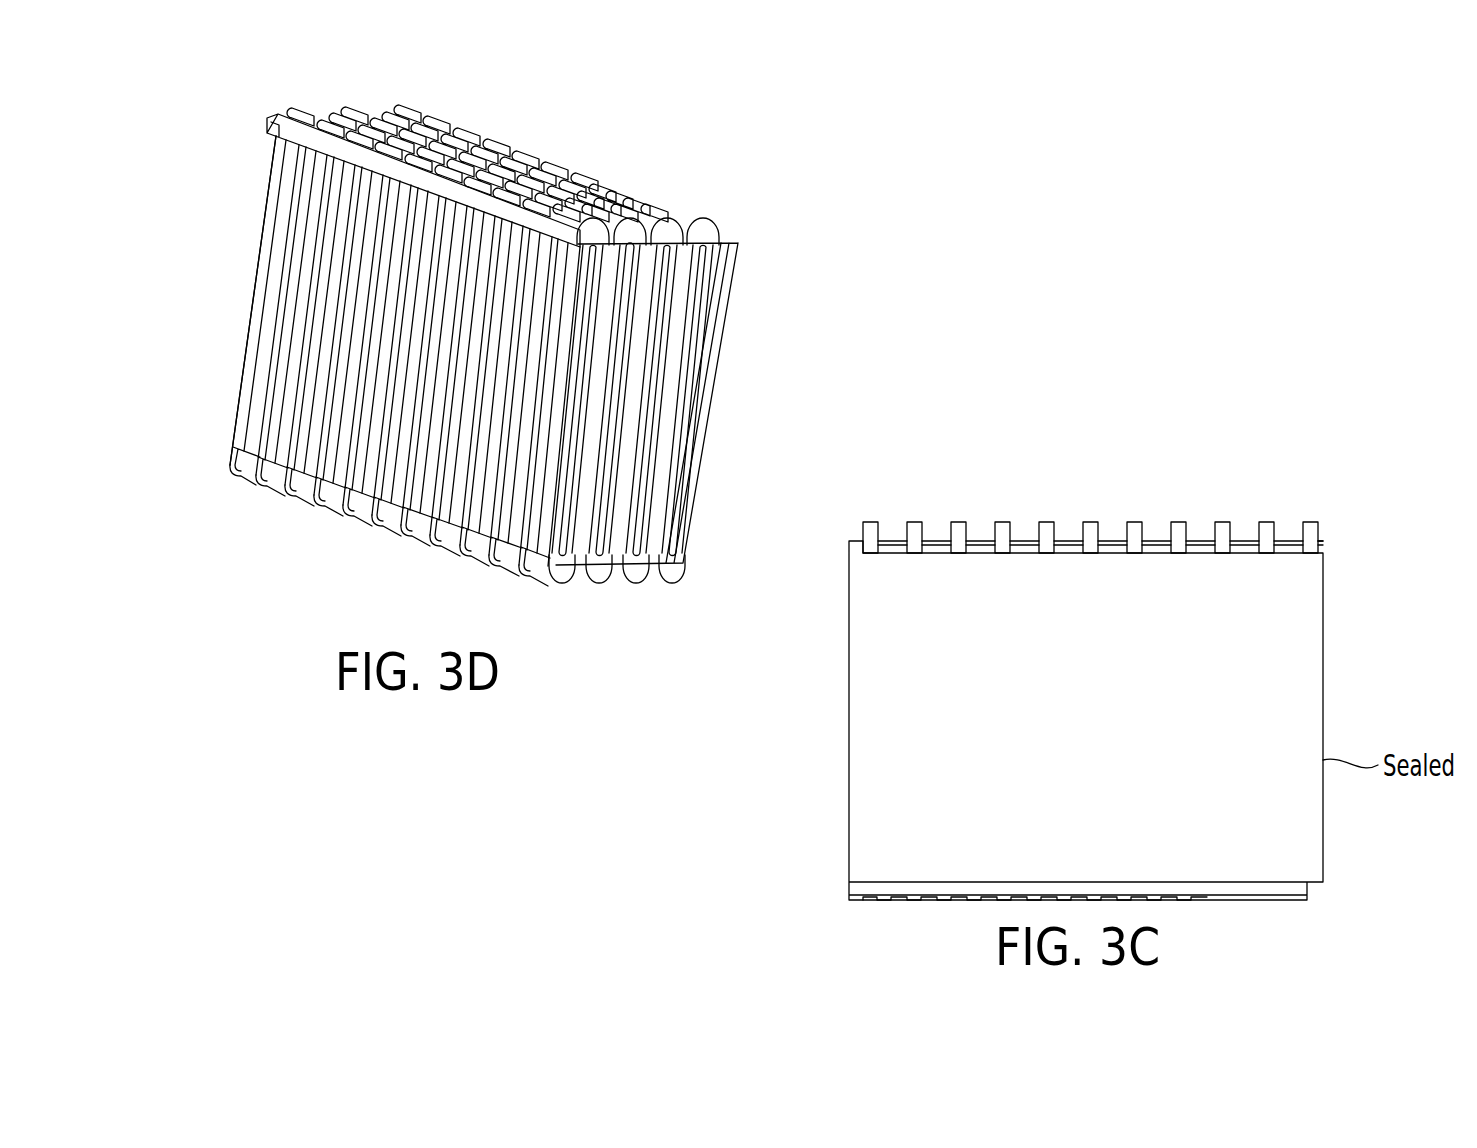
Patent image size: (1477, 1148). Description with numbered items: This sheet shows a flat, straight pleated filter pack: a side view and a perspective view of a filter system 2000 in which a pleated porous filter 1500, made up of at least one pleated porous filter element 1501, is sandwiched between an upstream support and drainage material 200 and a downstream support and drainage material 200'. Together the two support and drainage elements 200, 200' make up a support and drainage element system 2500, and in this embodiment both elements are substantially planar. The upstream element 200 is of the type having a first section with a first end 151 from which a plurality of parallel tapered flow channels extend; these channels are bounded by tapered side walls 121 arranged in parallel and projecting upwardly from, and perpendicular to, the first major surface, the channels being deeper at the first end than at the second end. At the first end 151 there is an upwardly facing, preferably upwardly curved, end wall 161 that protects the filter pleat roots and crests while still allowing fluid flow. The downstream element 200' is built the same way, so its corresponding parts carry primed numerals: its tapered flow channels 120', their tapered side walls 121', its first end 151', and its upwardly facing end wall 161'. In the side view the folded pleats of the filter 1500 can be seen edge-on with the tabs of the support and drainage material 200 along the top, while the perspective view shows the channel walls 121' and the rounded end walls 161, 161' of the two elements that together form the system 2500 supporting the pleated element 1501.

In FIG. 3D, the filter system 2000 is at (200, 69).
In FIG. 3C, the filter system 2000 is at (1448, 621).
In FIG. 3D, the first end 151 is at (634, 296).
In FIG. 3D, the support and drainage material 200 is at (731, 312).
In FIG. 3C, the support and drainage material 200 is at (1116, 483).
In FIG. 3D, the end wall 161 is at (557, 163).
In FIG. 3D, the tapered side walls 121 is at (693, 378).
In FIG. 3D, the pleated porous filter 1500 is at (730, 282).
In FIG. 3D, the pleated porous filter element 1501 is at (693, 403).
In FIG. 3D, the tapered flow channels 120' is at (516, 361).
In FIG. 3D, the tapered side walls 121' is at (740, 400).
In FIG. 3D, the first end 151' is at (707, 528).
In FIG. 3D, the end wall 161' is at (617, 600).
In FIG. 3D, the support and drainage material 200' is at (709, 642).
In FIG. 3D, the support and drainage element system 2500 is at (281, 124).